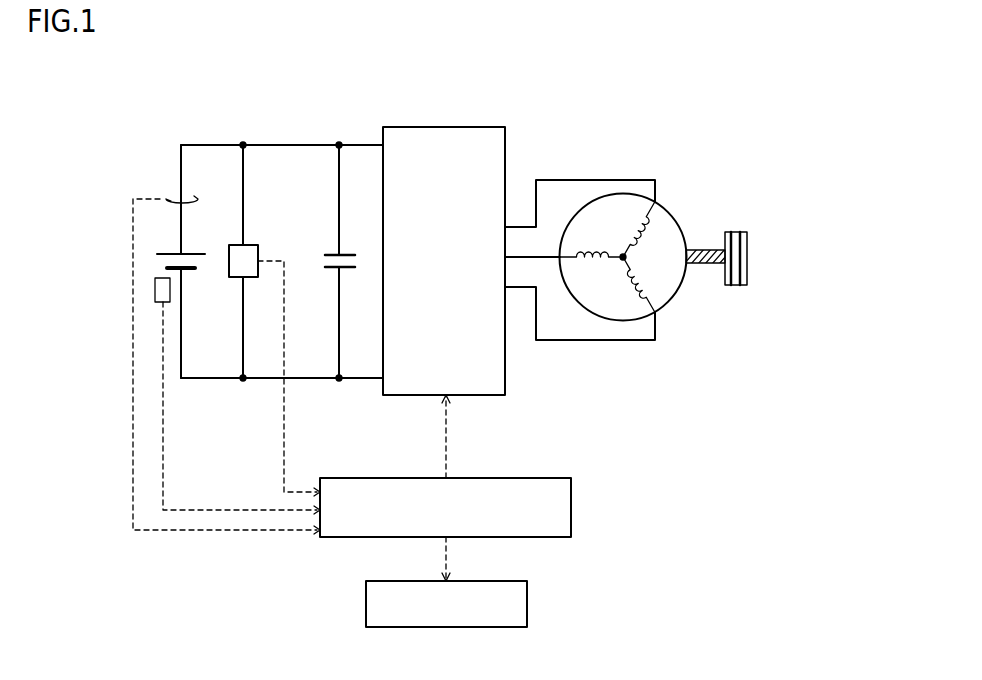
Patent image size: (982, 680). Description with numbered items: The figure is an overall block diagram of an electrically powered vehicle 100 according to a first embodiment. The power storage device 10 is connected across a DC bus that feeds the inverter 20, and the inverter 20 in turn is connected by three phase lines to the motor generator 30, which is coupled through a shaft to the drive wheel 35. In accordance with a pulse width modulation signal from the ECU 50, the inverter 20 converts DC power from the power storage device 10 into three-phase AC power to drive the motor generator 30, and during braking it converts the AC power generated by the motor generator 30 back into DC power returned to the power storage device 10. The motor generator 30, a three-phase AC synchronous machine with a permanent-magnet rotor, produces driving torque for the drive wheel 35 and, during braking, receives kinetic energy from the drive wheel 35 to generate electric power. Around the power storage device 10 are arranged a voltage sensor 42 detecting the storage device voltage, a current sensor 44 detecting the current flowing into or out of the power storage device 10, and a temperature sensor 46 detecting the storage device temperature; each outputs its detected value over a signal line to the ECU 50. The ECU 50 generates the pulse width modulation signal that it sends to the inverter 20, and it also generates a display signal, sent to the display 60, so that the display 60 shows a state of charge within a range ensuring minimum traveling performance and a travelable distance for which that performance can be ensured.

The electrically powered vehicle 100 is at (171, 79).
The power storage device 10 is at (157, 254).
The inverter 20 is at (440, 127).
The motor generator 30 is at (672, 213).
The drive wheel 35 is at (735, 232).
The voltage sensor 42 is at (257, 243).
The current sensor 44 is at (172, 197).
The temperature sensor 46 is at (155, 290).
The electronic control unit 50 is at (520, 478).
The display 60 is at (520, 581).